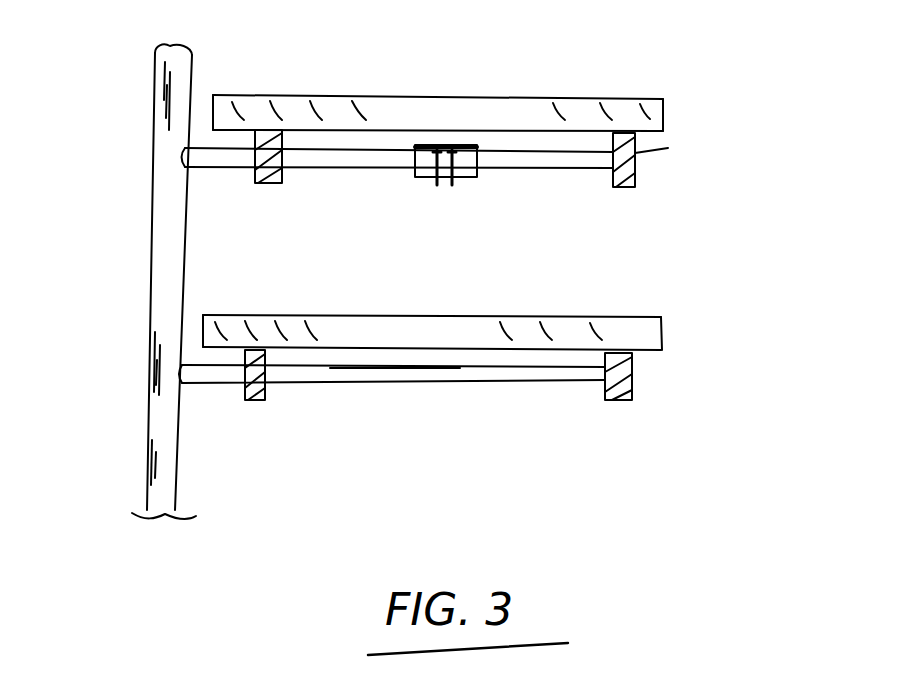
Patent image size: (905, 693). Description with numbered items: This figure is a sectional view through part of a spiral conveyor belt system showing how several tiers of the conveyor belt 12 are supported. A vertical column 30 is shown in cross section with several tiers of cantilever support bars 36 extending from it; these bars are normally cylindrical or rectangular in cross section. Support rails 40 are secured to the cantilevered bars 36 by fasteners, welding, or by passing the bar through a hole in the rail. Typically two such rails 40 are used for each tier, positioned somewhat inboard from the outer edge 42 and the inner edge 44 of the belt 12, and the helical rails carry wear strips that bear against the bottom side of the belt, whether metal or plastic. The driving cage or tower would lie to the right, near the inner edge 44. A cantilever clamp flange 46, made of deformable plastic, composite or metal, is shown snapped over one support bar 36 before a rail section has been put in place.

The conveyor belt 12 is at (577, 107).
The column 30 is at (167, 268).
The cantilever support bar 36 is at (582, 173).
The support rail 40 is at (270, 183).
The outer edge 42 is at (211, 92).
The inner edge 44 is at (665, 108).
The cantilever clamp flange 46 is at (460, 183).